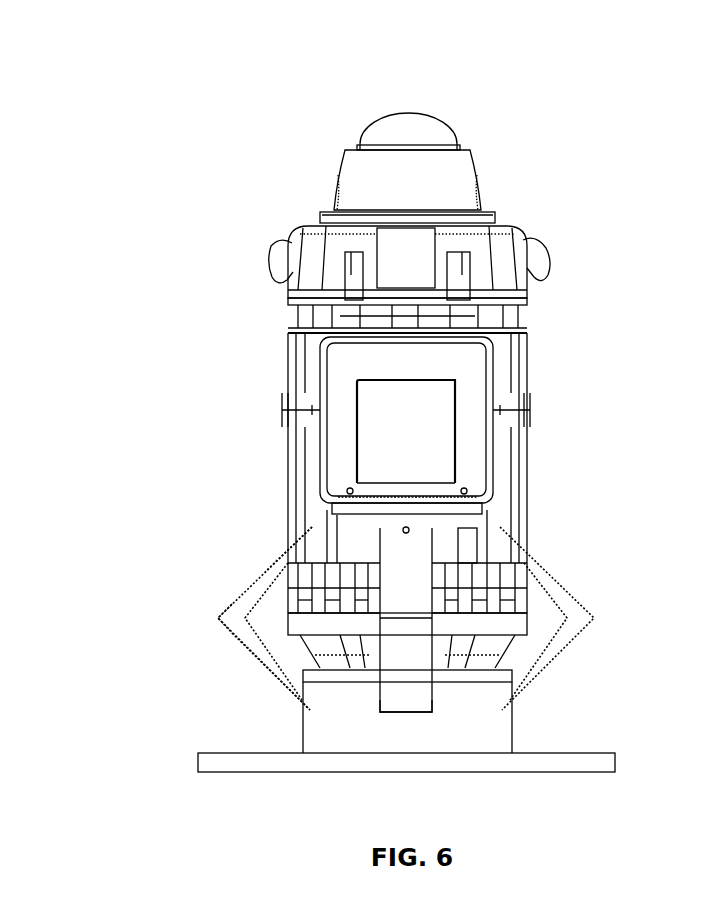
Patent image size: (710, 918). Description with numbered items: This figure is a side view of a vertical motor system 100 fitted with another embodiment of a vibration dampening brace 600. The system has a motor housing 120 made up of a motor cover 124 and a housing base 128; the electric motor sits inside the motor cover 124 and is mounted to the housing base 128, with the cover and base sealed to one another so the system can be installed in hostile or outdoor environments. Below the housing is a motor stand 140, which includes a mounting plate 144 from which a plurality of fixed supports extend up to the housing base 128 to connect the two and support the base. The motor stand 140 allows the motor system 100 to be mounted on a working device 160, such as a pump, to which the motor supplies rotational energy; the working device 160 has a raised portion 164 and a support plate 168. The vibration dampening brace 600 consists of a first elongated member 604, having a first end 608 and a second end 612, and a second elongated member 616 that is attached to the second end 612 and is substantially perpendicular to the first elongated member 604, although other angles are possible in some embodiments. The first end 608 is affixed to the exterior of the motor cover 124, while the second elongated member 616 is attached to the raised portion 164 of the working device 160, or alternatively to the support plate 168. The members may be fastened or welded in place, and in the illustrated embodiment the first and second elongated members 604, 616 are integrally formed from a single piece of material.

The vertical motor system 100 is at (306, 140).
The motor housing 120 is at (540, 522).
The motor cover 124 is at (502, 475).
The housing base 128 is at (518, 625).
The motor stand 140 is at (515, 648).
The mounting plate 144 is at (500, 678).
The working device 160 is at (440, 745).
The raised portion 164 is at (493, 720).
The support plate 168 is at (472, 765).
The vibration dampening brace 600 is at (351, 653).
The first elongated member 604 is at (395, 560).
The first end 608 is at (292, 558).
The second end 612 is at (233, 615).
The second elongated member 616 is at (260, 648).